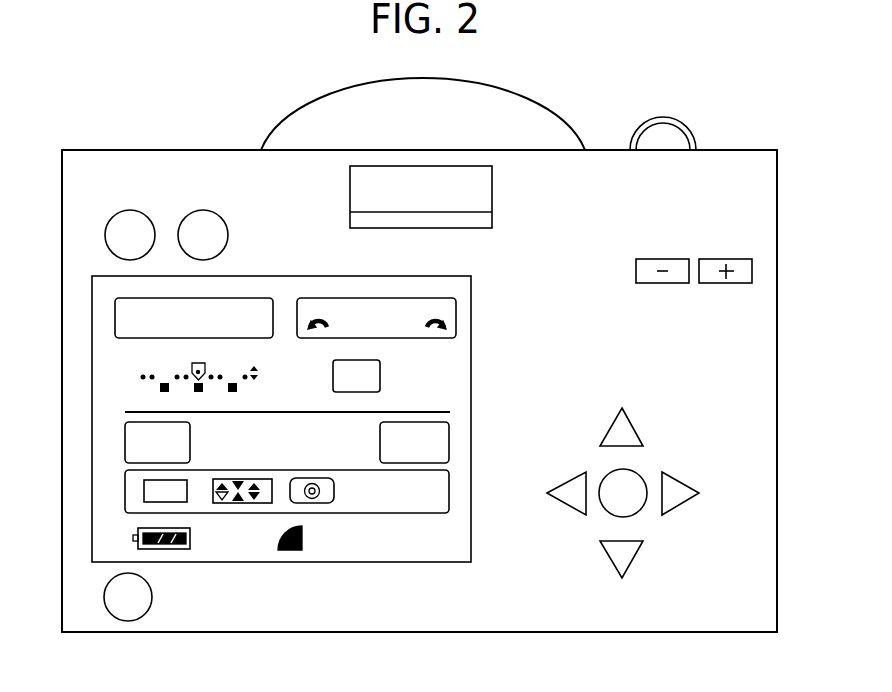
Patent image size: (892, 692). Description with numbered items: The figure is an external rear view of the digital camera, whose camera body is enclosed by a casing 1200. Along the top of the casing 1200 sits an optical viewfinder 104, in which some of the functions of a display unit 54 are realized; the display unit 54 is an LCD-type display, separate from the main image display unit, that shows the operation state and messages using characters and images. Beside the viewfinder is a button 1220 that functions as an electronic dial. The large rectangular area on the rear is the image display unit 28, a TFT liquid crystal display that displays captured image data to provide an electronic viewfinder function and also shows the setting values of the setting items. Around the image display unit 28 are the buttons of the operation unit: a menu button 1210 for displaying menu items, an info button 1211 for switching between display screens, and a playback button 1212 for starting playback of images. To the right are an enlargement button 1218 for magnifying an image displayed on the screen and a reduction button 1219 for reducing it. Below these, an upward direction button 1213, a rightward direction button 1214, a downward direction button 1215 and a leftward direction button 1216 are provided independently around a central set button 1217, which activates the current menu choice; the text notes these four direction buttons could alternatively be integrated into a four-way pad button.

The casing 1200 is at (742, 150).
The button functioning as electronic dial 1220 is at (663, 118).
The optical viewfinder 104 is at (459, 217).
The display unit 54 is at (458, 228).
The menu button 1210 is at (130, 210).
The info button 1211 is at (203, 210).
The image display unit 28 is at (318, 276).
The reduction button 1219 is at (662, 259).
The enlargement button 1218 is at (726, 259).
The upward direction button 1213 is at (635, 425).
The rightward direction button 1214 is at (682, 483).
The downward direction button 1215 is at (630, 553).
The leftward direction button 1216 is at (565, 505).
The set button 1217 is at (676, 458).
The playback button 1212 is at (152, 597).